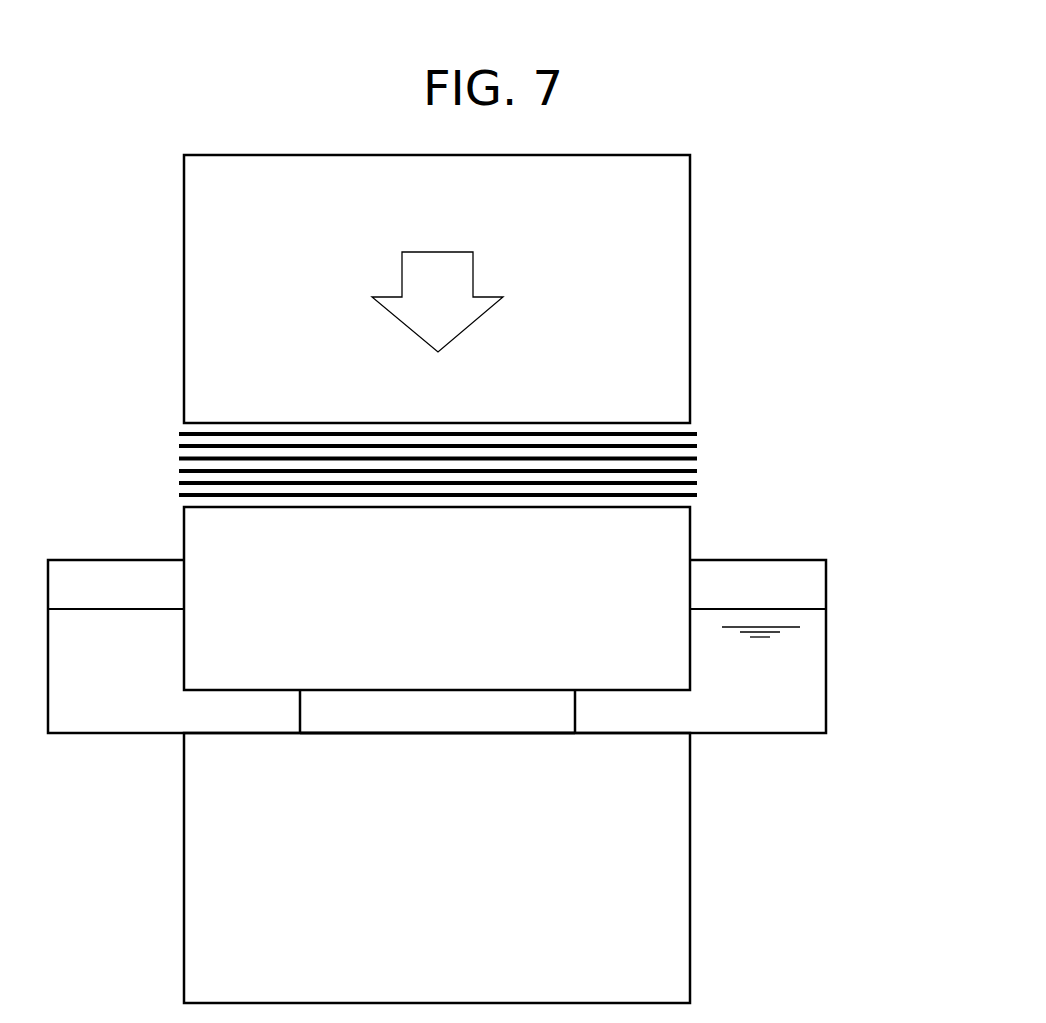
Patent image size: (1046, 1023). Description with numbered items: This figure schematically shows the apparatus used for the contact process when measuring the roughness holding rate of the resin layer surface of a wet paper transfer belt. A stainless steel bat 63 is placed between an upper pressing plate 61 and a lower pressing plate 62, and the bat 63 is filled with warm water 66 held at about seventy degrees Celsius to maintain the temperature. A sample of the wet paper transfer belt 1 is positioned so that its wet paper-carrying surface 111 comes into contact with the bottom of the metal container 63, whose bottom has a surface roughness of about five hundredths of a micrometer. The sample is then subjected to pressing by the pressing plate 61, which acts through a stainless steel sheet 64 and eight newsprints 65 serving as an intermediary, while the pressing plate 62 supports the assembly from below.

The pressing plate 61 is at (637, 293).
The newsprints 65 is at (680, 463).
The stainless steel sheet 64 is at (680, 527).
The stainless steel bat 63 is at (826, 682).
The warm water 66 is at (805, 627).
The wet paper transfer belt 1 is at (553, 717).
The wet paper-carrying surface 111 is at (367, 733).
The pressing plate 62 is at (655, 890).